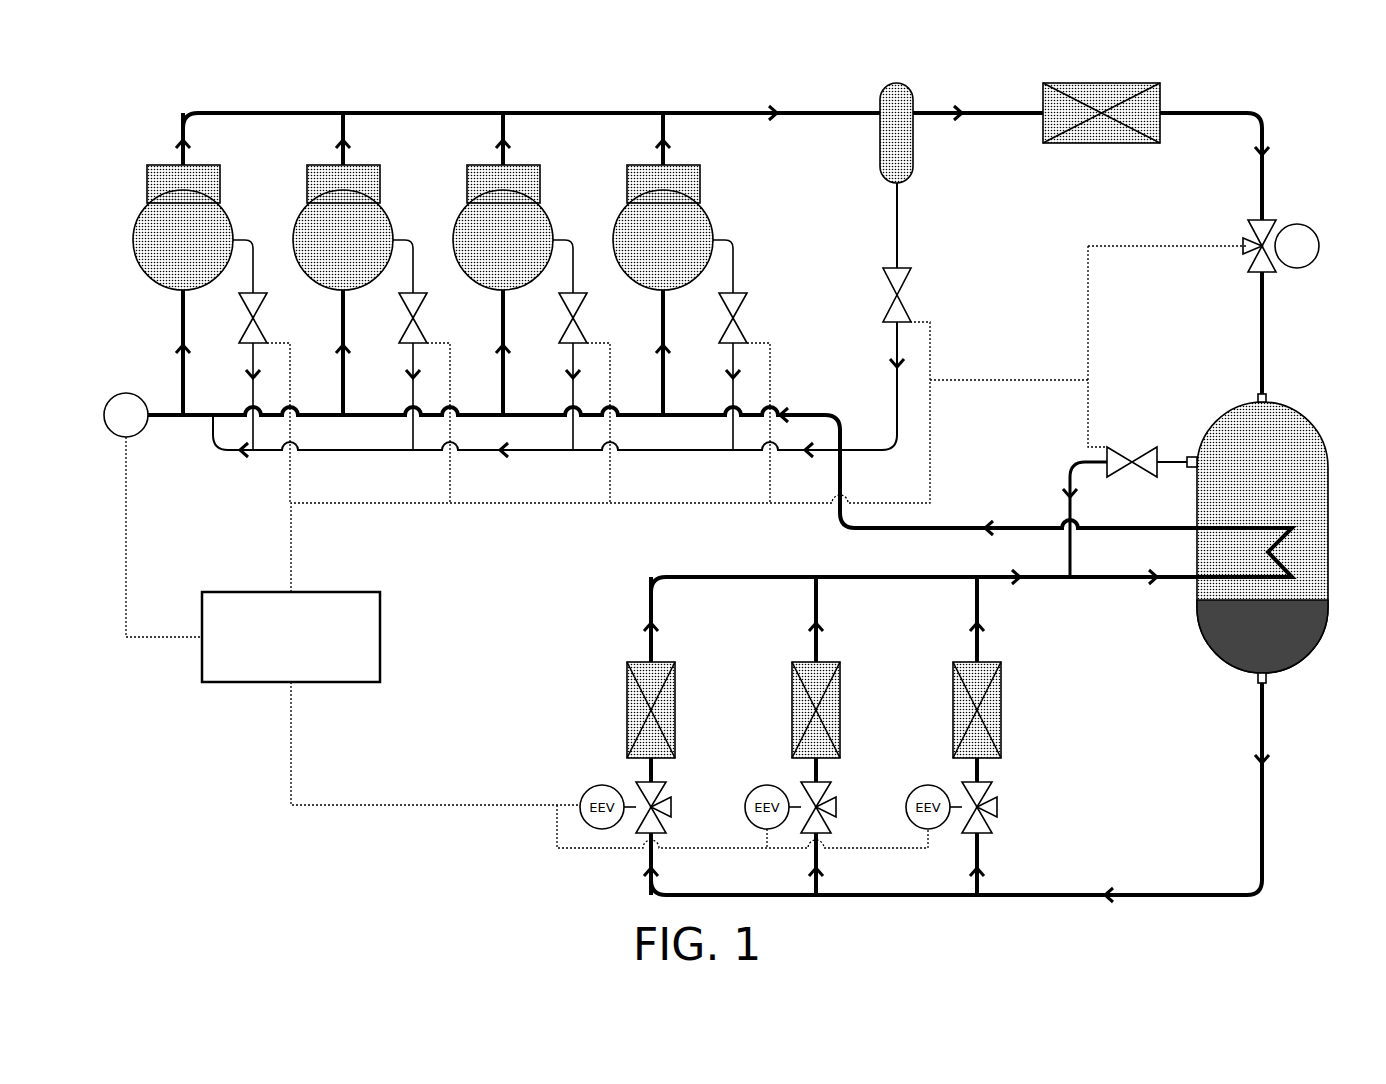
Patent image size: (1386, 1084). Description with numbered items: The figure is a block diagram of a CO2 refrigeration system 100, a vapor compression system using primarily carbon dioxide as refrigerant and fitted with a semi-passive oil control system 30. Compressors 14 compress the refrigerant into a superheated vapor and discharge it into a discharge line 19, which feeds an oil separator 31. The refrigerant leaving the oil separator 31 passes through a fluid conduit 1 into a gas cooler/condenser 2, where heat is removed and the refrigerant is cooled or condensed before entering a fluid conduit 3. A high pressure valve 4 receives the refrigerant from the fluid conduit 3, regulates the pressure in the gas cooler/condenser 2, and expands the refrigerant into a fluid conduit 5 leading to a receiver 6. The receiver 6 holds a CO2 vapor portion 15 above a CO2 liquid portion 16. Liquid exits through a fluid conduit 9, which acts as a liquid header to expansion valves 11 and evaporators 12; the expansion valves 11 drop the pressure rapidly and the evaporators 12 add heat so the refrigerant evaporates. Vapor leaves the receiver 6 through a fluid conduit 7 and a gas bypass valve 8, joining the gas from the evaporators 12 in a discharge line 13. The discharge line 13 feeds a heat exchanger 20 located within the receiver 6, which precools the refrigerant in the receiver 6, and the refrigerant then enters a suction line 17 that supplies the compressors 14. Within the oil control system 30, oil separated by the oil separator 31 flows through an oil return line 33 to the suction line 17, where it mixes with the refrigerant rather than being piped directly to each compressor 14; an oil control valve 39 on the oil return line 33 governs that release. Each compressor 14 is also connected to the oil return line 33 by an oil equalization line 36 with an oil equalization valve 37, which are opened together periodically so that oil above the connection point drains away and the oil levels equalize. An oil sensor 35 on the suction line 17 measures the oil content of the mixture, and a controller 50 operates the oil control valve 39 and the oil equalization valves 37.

The CO2 refrigeration system 100 is at (209, 70).
The fluid conduit 1 is at (1003, 113).
The gas cooler/condenser 2 is at (1122, 85).
The fluid conduit 3 is at (1263, 120).
The high pressure valve 4 is at (1297, 224).
The fluid conduit 5 is at (1264, 315).
The receiver 6 is at (1246, 526).
The fluid conduit 7 is at (1068, 468).
The gas bypass valve 8 is at (1132, 450).
The fluid conduit 9 is at (1264, 826).
The expansion valve 11 is at (589, 788).
The evaporator 12 is at (676, 686).
The discharge line 13 is at (718, 577).
The compressor 14 is at (220, 187).
The CO2 vapor portion 15 is at (1225, 425).
The CO2 liquid portion 16 is at (1210, 655).
The suction line 17 is at (828, 415).
The discharge line 19 is at (585, 113).
The heat exchanger 20 is at (1265, 526).
The oil control system 30 is at (975, 341).
The oil separator 31 is at (880, 140).
The oil return line 33 is at (899, 213).
The oil sensor 35 is at (142, 433).
The oil equalization line 36 is at (251, 238).
The oil equalization valve 37 is at (258, 318).
The oil control valve 39 is at (899, 295).
The controller 50 is at (378, 600).